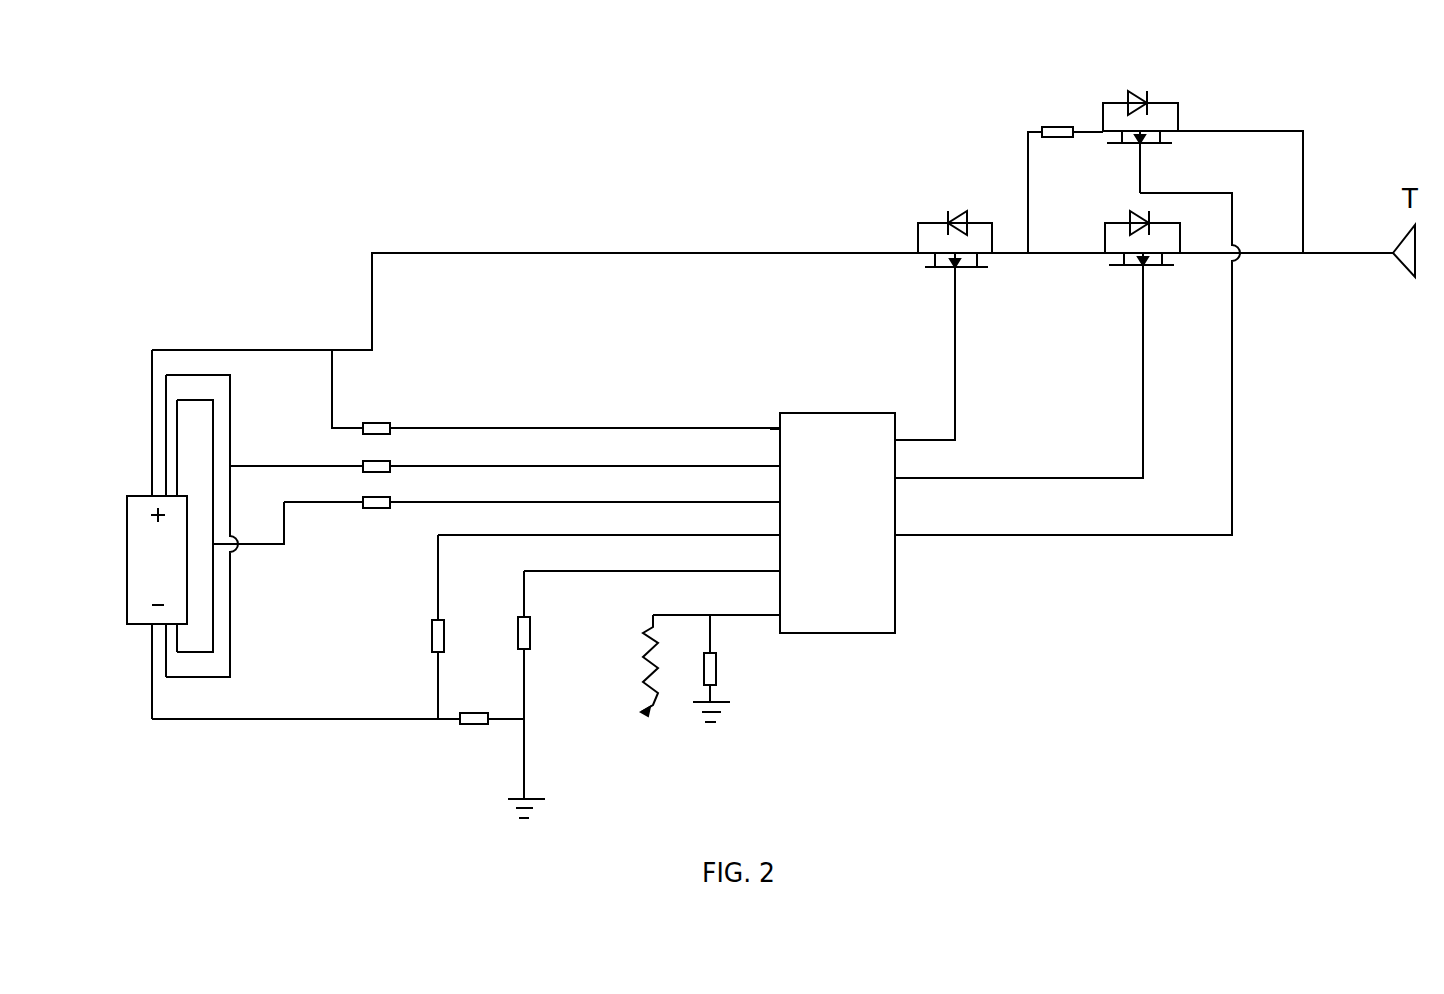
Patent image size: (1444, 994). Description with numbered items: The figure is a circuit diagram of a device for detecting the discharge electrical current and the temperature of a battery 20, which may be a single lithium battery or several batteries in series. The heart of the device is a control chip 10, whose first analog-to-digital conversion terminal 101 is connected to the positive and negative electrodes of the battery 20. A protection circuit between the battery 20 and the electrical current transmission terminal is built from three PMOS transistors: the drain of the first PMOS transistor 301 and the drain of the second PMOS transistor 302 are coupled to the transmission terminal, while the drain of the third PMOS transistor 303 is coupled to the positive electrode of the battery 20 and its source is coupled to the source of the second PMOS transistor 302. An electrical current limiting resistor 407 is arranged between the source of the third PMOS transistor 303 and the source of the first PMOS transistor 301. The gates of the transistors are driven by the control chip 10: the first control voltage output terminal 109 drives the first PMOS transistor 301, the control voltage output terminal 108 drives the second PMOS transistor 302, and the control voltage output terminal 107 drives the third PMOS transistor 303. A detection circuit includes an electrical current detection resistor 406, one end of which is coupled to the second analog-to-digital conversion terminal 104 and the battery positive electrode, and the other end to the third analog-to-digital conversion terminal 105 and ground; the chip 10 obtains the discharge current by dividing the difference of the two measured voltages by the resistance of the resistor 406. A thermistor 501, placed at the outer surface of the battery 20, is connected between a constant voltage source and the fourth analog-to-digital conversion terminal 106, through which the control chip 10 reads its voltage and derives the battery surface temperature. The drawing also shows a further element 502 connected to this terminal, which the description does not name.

The battery 20 is at (136, 560).
The control chip 10 is at (837, 506).
The first analog-to-digital conversion terminal 101 is at (797, 431).
The second analog-to-digital conversion terminal 104 is at (797, 536).
The third analog-to-digital conversion terminal 105 is at (797, 573).
The fourth analog-to-digital conversion terminal 106 is at (797, 616).
The control voltage output terminal 107 is at (878, 443).
The control voltage output terminal 108 is at (878, 479).
The first control voltage output terminal 109 is at (878, 536).
The first PMOS transistor 301 is at (1140, 127).
The second PMOS transistor 302 is at (1037, 335).
The third PMOS transistor 303 is at (943, 309).
The electrical current detection resistor 406 is at (338, 737).
The electrical current limiting resistor 407 is at (1065, 175).
The thermistor 501 is at (629, 665).
The resistor 502 is at (729, 668).